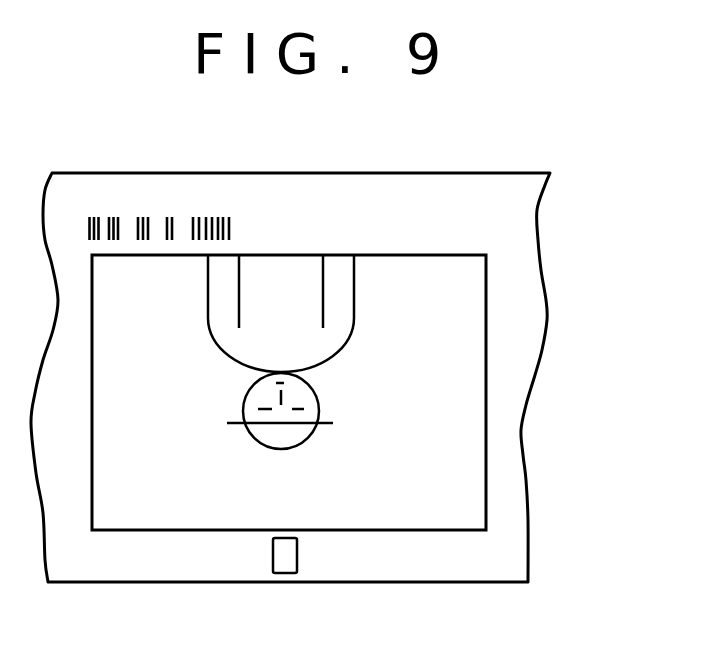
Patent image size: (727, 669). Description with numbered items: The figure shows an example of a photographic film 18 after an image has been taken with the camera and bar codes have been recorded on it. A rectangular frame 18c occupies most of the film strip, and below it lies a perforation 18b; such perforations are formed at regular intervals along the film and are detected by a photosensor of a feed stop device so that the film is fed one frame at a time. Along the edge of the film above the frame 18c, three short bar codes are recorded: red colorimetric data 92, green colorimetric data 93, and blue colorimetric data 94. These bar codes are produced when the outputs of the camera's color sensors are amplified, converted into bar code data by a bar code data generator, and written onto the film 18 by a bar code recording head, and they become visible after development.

The photographic film 18 is at (525, 473).
The frame 18c is at (465, 383).
The perforation 18b is at (290, 562).
The red colorimetric data 92 is at (117, 212).
The green colorimetric data 93 is at (176, 212).
The blue colorimetric data 94 is at (233, 212).